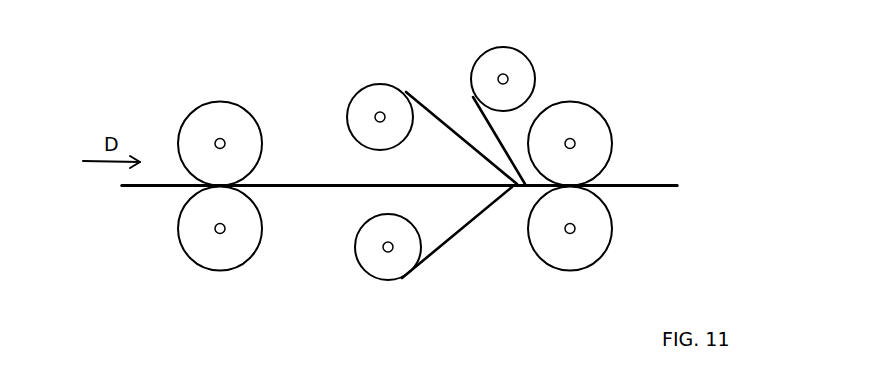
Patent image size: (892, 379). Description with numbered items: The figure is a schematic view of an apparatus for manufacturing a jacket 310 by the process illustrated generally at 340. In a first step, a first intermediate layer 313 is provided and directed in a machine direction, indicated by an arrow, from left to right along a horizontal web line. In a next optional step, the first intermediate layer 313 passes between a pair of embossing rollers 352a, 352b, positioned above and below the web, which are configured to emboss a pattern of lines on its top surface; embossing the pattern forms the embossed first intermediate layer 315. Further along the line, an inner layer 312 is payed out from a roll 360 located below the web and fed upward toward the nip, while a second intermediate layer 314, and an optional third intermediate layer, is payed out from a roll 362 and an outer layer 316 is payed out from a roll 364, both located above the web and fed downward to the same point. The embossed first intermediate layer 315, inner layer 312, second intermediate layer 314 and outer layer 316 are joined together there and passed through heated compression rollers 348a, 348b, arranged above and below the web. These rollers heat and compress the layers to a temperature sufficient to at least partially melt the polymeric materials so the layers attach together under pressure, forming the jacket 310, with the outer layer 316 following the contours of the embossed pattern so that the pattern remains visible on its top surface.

The process 340 is at (127, 65).
The embossed first intermediate layer 315 is at (310, 183).
The first intermediate layer 313 is at (147, 188).
The jacket 310 is at (660, 183).
The embossing roller 352a is at (247, 115).
The embossing roller 352b is at (227, 270).
The roll 362 is at (390, 85).
The roll 364 is at (533, 61).
The heated compression roller 348a is at (611, 128).
The heated compression roller 348b is at (581, 267).
The roll 360 is at (377, 278).
The second intermediate layer 314 is at (442, 130).
The outer layer 316 is at (473, 98).
The inner layer 312 is at (443, 247).